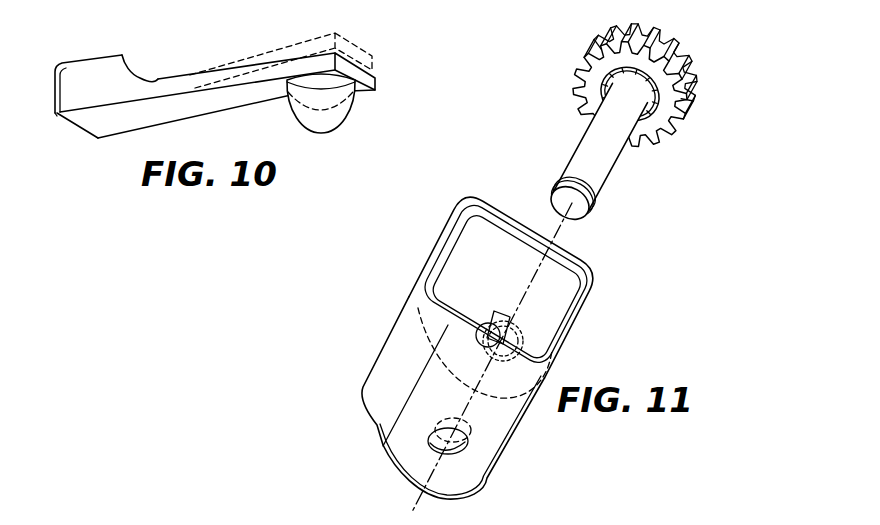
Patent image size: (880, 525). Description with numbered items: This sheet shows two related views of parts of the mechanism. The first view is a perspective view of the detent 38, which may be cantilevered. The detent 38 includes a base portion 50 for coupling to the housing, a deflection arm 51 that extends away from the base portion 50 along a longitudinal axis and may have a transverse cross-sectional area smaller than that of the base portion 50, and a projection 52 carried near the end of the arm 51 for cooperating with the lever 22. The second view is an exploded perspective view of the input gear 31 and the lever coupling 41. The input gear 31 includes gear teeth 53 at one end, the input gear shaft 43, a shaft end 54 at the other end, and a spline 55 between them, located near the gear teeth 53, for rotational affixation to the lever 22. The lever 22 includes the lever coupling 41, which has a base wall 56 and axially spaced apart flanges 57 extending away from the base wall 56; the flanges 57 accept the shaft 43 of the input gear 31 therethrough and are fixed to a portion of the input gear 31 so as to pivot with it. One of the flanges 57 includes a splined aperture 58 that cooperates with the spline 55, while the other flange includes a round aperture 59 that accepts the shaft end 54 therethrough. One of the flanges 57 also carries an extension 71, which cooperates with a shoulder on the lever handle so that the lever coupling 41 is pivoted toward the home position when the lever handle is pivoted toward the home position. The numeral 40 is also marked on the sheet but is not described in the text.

In FIG. 10, the detent 38 is at (97, 64).
In FIG. 10, the base portion 50 is at (56, 117).
In FIG. 10, the deflection arm 51 is at (243, 113).
In FIG. 10, the projection 52 is at (335, 118).
In FIG. 11, the gear teeth 53 is at (692, 54).
In FIG. 11, the spline 55 is at (648, 105).
In FIG. 11, the input gear shaft 43 is at (605, 163).
In FIG. 11, the shaft end 54 is at (572, 220).
In FIG. 11, the input gear 31 is at (666, 158).
In FIG. 11, the base wall 56 is at (392, 335).
In FIG. 11, the flanges 57 is at (564, 306).
In FIG. 11, the splined aperture 58 is at (487, 303).
In FIG. 11, the extension 71 is at (505, 313).
In FIG. 11, the round aperture 59 is at (428, 441).
In FIG. 11, the lever coupling 41 is at (410, 256).
In FIG. 11, the lever 22 is at (288, 357).
In FIG. 11, the component 40 is at (203, 524).